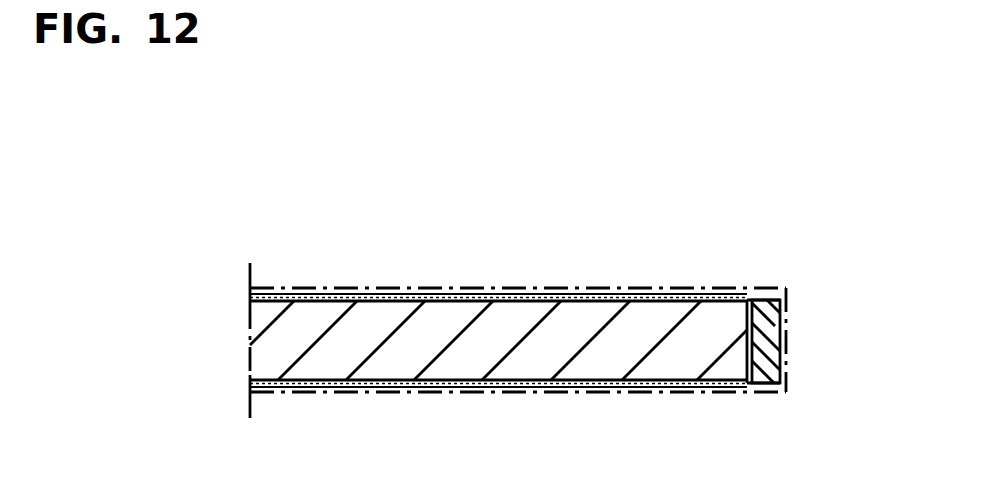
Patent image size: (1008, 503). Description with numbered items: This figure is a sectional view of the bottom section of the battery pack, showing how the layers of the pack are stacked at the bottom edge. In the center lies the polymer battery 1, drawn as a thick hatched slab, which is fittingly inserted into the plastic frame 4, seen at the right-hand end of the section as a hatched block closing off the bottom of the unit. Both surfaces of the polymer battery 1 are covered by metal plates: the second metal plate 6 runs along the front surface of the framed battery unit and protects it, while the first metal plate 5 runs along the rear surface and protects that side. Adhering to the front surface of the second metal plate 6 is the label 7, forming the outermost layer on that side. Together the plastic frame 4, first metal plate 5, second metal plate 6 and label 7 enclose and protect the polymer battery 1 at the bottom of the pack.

The polymer battery 1 is at (470, 362).
The plastic frame 4 is at (768, 368).
The first metal plate 5 is at (627, 386).
The second metal plate 6 is at (538, 292).
The label 7 is at (363, 291).